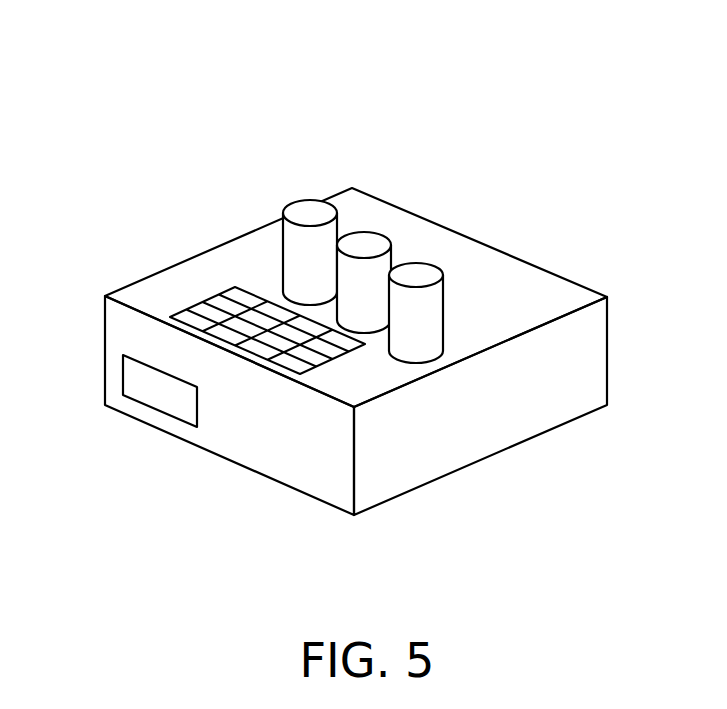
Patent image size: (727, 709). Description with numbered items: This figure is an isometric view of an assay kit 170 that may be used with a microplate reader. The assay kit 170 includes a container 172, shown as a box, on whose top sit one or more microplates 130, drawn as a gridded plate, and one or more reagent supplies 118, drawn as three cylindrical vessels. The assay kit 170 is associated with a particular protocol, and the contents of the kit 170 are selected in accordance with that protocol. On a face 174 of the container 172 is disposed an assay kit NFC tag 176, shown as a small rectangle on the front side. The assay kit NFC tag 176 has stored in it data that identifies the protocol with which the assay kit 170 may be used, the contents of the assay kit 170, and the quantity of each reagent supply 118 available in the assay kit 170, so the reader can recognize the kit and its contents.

The assay kit 170 is at (182, 118).
The container 172 is at (129, 298).
The face 174 is at (266, 455).
The assay kit NFC tag 176 is at (162, 400).
The microplate 130 is at (205, 315).
The reagent supply 118 is at (308, 210).